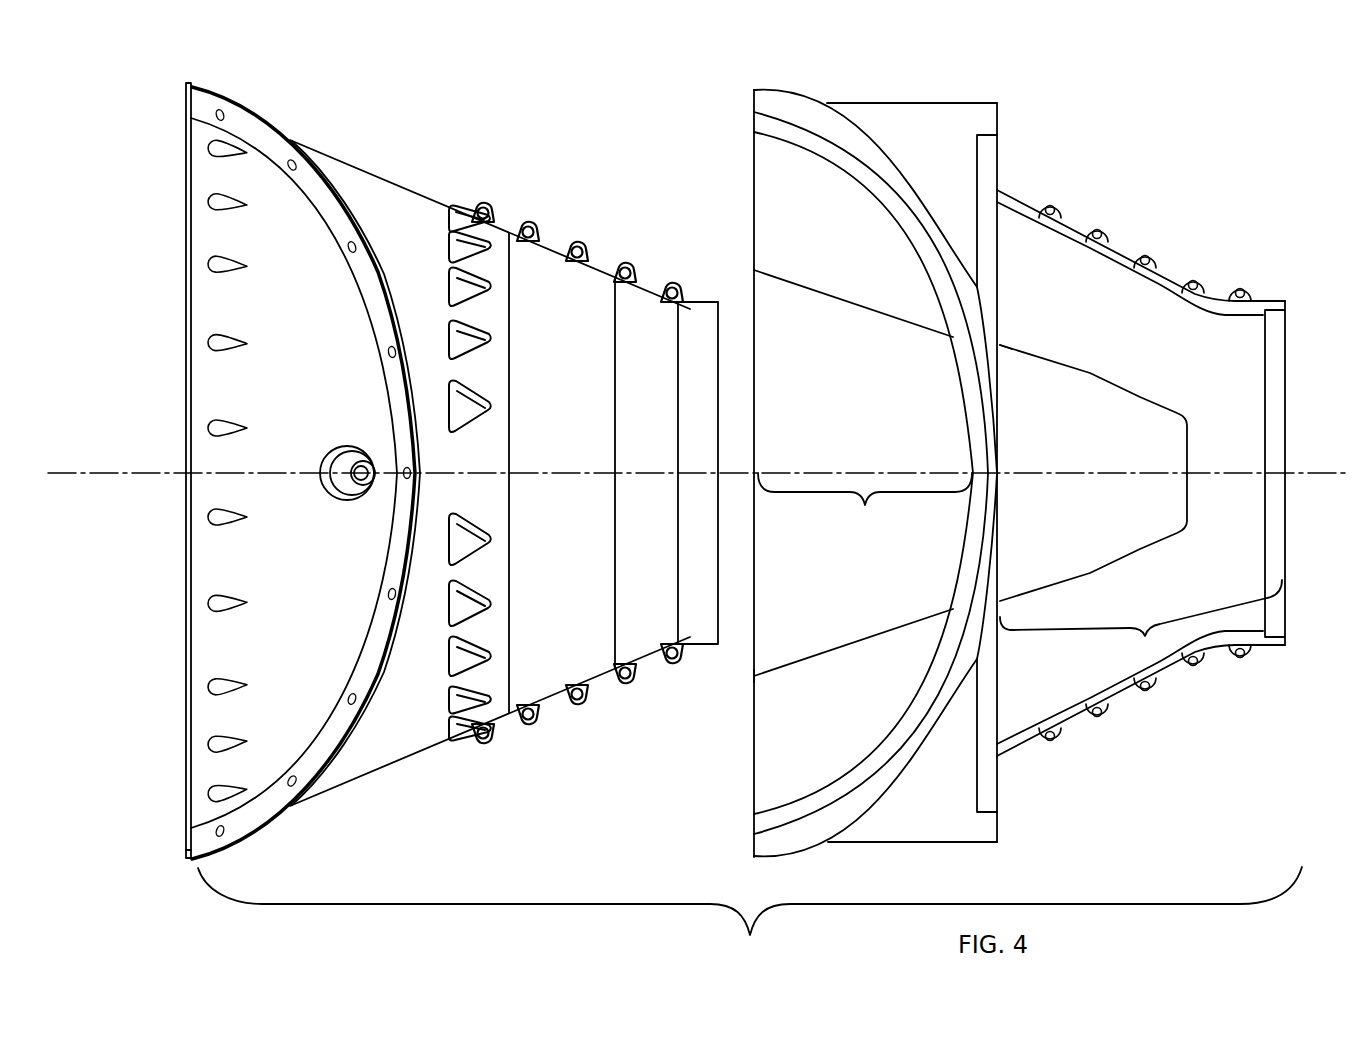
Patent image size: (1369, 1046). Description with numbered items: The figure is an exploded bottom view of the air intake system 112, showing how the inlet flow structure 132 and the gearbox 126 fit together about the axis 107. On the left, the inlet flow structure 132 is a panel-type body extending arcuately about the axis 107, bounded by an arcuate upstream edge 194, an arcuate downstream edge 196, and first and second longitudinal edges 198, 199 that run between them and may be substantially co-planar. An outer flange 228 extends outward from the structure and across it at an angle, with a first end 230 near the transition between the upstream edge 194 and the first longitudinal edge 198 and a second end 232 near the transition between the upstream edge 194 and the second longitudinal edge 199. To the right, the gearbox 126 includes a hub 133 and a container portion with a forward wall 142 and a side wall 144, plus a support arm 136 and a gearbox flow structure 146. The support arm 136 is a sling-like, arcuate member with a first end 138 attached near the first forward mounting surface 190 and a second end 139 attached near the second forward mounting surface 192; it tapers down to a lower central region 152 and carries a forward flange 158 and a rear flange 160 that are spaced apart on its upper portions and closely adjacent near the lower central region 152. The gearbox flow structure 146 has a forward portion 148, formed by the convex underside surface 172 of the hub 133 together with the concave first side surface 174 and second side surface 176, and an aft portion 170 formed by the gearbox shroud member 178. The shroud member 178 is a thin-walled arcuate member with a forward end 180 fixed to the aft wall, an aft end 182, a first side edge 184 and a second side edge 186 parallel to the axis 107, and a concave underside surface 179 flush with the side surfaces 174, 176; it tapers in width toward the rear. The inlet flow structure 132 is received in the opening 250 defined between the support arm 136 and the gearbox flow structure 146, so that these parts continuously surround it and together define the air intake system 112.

The axis 107 is at (1296, 470).
The air intake system 112 is at (750, 915).
The gearbox 126 is at (963, 97).
The inlet flow structure 132 is at (408, 150).
The hub 133 is at (754, 283).
The support arm 136 is at (983, 378).
The first end 138 is at (810, 95).
The second end 139 is at (927, 843).
The forward wall 142 is at (754, 192).
The side wall 144 is at (908, 103).
The gearbox flow structure 146 is at (914, 648).
The forward portion 148 is at (865, 504).
The lower central region 152 is at (998, 456).
The forward flange 158 is at (910, 236).
The rear flange 160 is at (995, 179).
The aft portion 170 is at (1141, 621).
The underside surface 172 is at (913, 549).
The first side surface 174 is at (797, 226).
The second side surface 176 is at (810, 738).
The gearbox shroud member 178 is at (1195, 327).
The underside surface 179 is at (1208, 391).
The forward end 180 is at (1015, 756).
The aft end 182 is at (1288, 345).
The first side edge 184 is at (1118, 253).
The second side edge 186 is at (1097, 715).
The first forward mounting surface 190 is at (754, 117).
The second forward mounting surface 192 is at (754, 833).
The upstream edge 194 is at (186, 314).
The downstream edge 196 is at (754, 677).
The first longitudinal edge 198 is at (433, 184).
The second longitudinal edge 199 is at (404, 768).
The outer flange 228 is at (313, 773).
The first end 230 is at (212, 94).
The second end 232 is at (190, 856).
The opening 250 is at (767, 382).